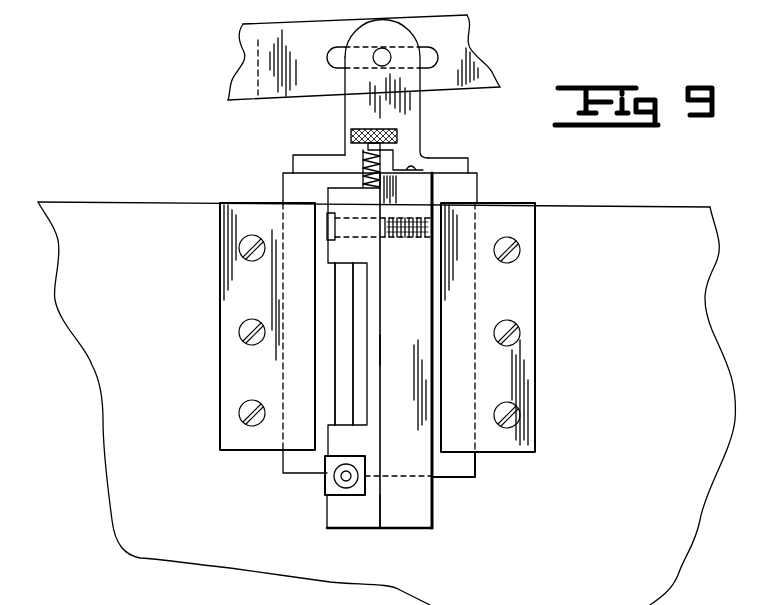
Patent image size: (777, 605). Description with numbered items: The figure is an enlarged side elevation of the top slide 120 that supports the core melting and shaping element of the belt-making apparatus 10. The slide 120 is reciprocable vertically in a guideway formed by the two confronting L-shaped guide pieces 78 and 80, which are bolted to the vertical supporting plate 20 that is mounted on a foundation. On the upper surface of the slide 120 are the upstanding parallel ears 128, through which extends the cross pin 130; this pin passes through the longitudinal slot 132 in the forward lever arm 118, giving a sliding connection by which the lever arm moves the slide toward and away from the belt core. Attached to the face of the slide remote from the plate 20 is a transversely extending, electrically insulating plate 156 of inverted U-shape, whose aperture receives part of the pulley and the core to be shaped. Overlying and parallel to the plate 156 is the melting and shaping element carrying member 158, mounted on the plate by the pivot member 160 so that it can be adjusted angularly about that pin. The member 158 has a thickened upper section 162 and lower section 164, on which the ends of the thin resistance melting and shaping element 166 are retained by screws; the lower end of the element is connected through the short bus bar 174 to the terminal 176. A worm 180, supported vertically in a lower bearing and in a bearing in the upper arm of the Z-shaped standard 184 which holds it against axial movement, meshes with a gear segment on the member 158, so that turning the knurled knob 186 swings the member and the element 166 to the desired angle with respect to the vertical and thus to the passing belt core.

The section line 10 is at (216, 600).
The vertical supporting plate 20 is at (640, 206).
The L-shaped guide piece 78 is at (537, 350).
The L-shaped guide piece 80 is at (217, 380).
The forward lever arm 118 is at (497, 40).
The top slide 120 is at (477, 479).
The upstanding parallel ears 128 is at (424, 110).
The cross pin 130 is at (373, 61).
The longitudinal slot 132 is at (419, 48).
The electrically insulating plate 156 is at (422, 506).
The melting and shaping element carrying member 158 is at (383, 352).
The pivot member 160 is at (403, 240).
The upper section 162 is at (327, 189).
The lower section 164 is at (363, 530).
The melting and shaping element 166 is at (342, 359).
The short bus bar 174 is at (343, 498).
The terminal 176 is at (336, 475).
The worm 180 is at (362, 163).
The Z-shaped standard 184 is at (468, 166).
The knurled knob 186 is at (398, 137).